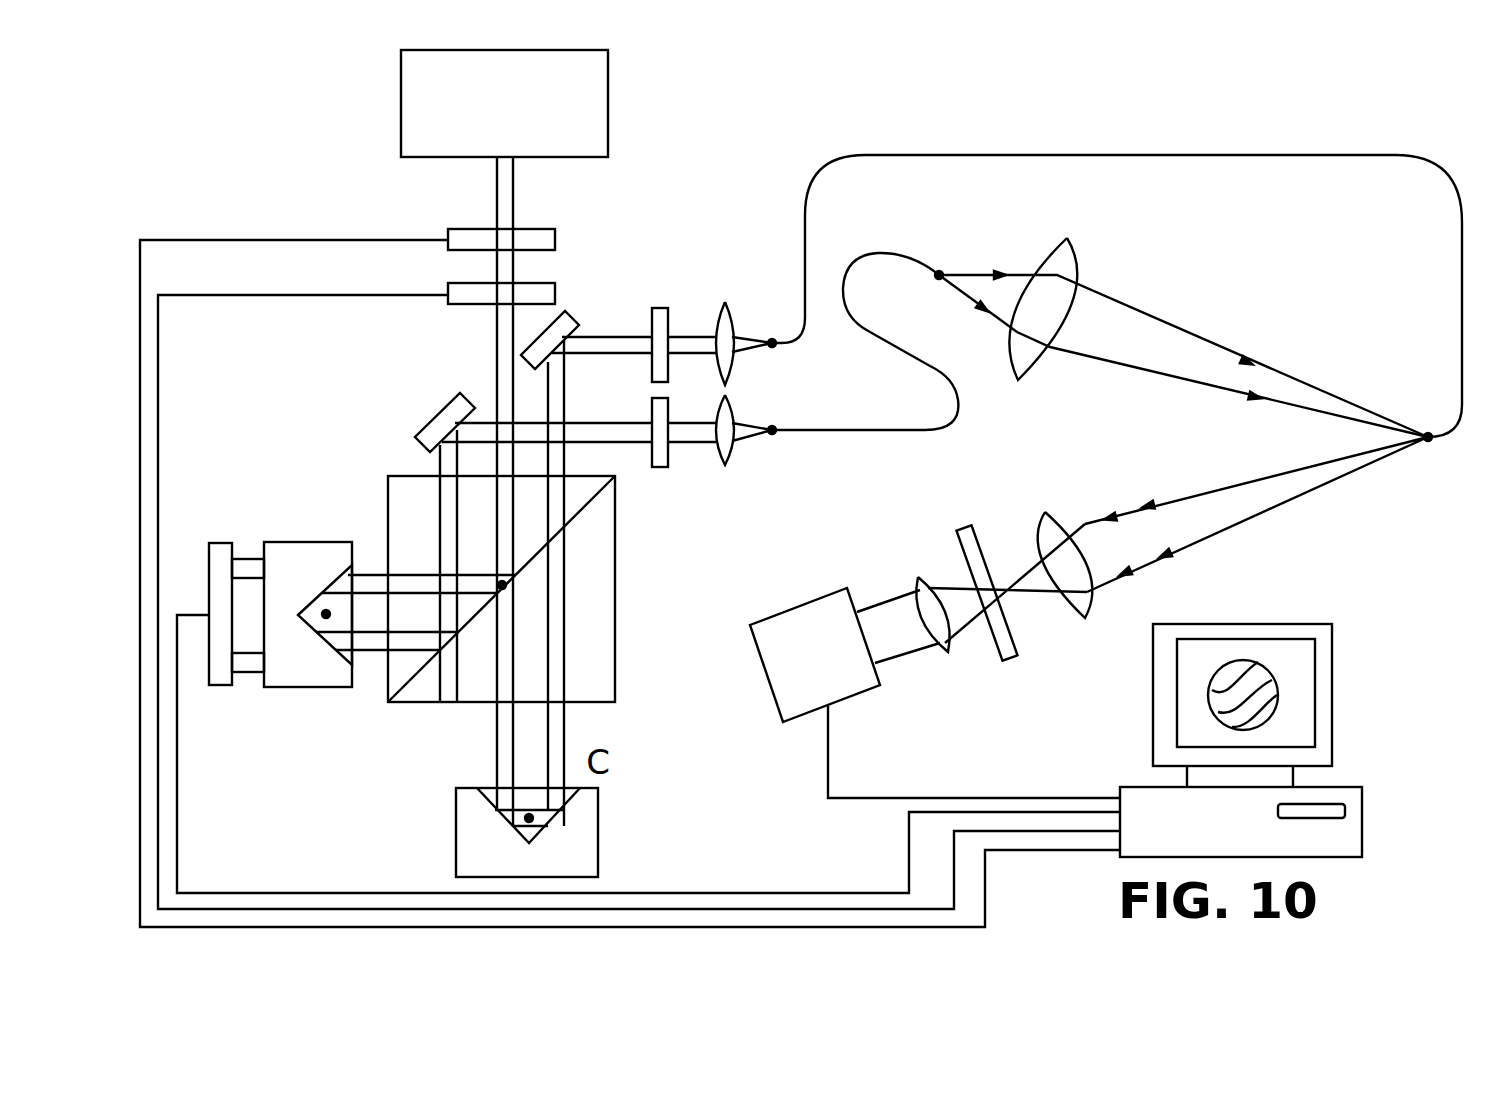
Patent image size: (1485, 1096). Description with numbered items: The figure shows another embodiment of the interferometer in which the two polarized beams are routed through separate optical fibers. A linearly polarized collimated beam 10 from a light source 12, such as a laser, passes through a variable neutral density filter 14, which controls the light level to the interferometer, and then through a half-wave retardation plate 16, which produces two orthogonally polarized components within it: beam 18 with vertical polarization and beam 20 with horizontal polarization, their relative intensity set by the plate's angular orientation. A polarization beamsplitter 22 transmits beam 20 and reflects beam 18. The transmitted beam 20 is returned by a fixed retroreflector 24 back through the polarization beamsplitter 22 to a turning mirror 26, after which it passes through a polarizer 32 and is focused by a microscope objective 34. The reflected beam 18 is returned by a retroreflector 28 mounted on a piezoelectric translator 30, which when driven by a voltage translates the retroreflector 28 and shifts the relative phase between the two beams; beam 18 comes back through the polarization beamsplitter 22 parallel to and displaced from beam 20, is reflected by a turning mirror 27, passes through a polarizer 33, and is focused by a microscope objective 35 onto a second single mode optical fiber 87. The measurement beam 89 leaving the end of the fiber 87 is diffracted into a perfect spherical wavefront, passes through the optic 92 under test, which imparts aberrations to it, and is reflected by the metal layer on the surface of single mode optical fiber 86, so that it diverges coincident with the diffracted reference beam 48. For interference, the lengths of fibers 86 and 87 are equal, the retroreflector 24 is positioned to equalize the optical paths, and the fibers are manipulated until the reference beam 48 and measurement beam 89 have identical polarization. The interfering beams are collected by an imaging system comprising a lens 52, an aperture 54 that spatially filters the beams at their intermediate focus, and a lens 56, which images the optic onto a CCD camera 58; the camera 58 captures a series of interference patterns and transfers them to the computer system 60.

The linearly polarized collimated beam 10 is at (494, 207).
The light source 12 is at (608, 113).
The variable neutral density filter 14 is at (555, 240).
The half-wave retardation plate 16 is at (555, 295).
The beam having vertical polarization 18 is at (373, 650).
The beam having horizontal polarization 20 is at (496, 748).
The polarization beamsplitter 22 is at (618, 592).
The fixed retroreflector 24 is at (562, 832).
The turning mirror 26 is at (575, 325).
The turning mirror 27 is at (445, 396).
The retroreflector 28 is at (303, 542).
The piezoelectric translator 30 is at (223, 542).
The polarizer 32 is at (660, 308).
The polarizer 33 is at (664, 467).
The microscope objective 34 is at (730, 320).
The microscope objective 35 is at (730, 468).
The reference beam 48 is at (1228, 487).
The lens 52 is at (1078, 620).
The aperture 54 is at (980, 538).
The lens 56 is at (940, 650).
The CCD camera 58 is at (760, 668).
The computer system 60 is at (1365, 797).
The single mode optical fiber 86 is at (1005, 155).
The second single mode optical fiber 87 is at (895, 430).
The measurement beam 89 is at (985, 275).
The optic under test 92 is at (1072, 272).